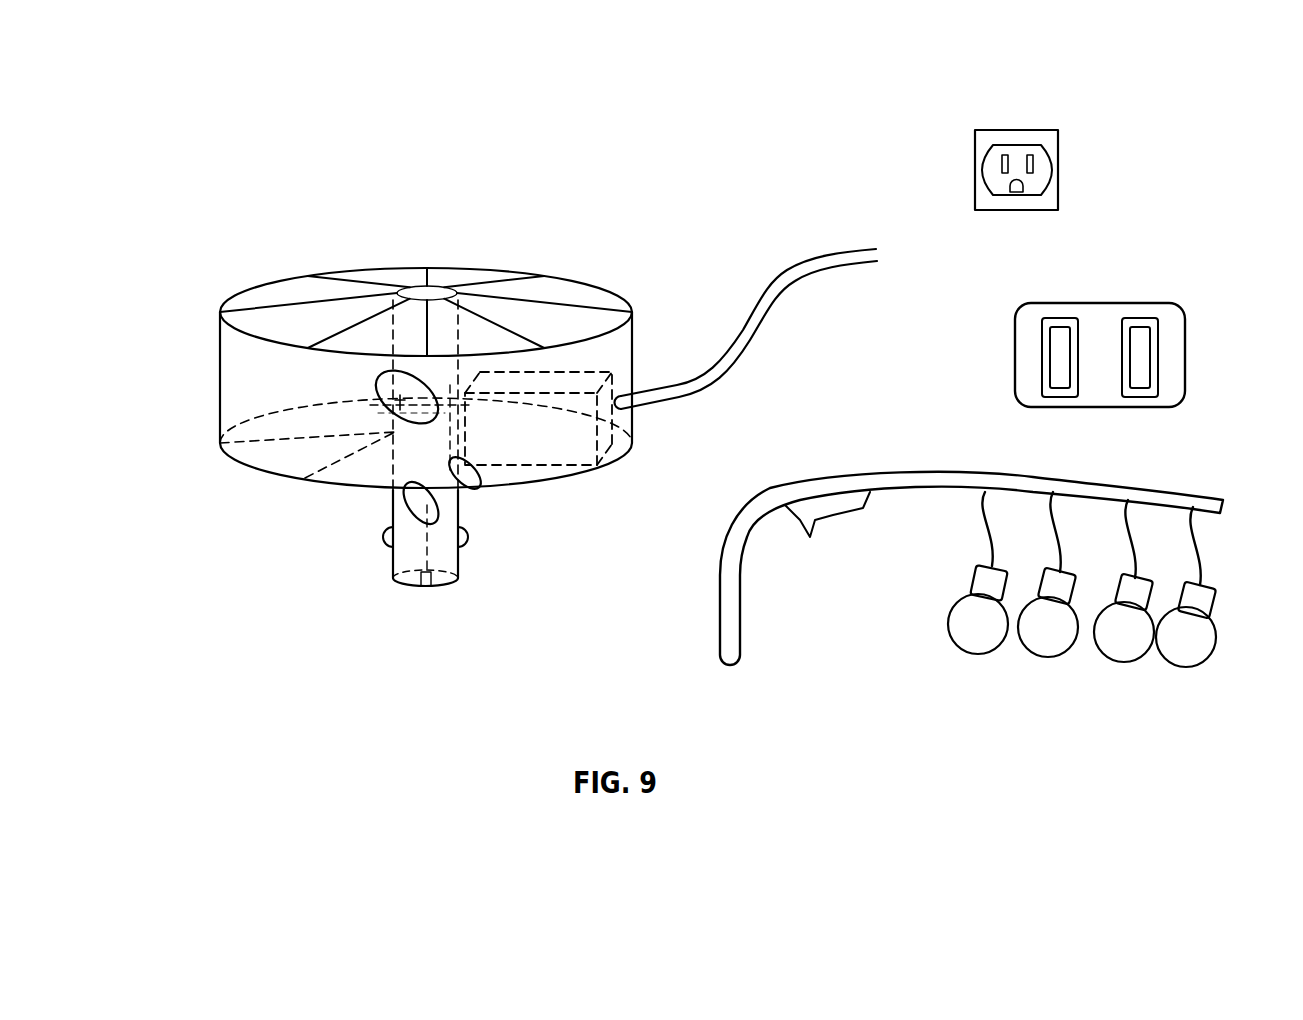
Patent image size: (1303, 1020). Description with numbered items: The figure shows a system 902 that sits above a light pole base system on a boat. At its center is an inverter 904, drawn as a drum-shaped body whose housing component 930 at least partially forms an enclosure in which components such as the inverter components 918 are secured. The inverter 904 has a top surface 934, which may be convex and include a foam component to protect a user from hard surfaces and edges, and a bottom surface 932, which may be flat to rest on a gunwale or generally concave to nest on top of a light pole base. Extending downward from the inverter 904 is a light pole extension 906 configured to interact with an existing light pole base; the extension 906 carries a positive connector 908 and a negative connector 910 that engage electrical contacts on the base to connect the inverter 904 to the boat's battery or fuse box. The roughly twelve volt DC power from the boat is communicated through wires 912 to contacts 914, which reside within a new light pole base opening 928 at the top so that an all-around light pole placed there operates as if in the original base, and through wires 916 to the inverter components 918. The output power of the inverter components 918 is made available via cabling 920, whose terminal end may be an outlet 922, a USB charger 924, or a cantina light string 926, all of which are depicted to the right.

The system 902 is at (375, 112).
The inverter 904 is at (283, 265).
The light pole extension 906 is at (464, 551).
The positive connector 908 is at (425, 591).
The negative connector 910 is at (382, 539).
The wires 912 is at (448, 519).
The contacts 914 is at (380, 398).
The wires 916 is at (481, 487).
The inverter components 918 is at (508, 443).
The cabling 920 is at (757, 340).
The outlet 922 is at (1060, 169).
The USB charger 924 is at (1187, 350).
The cantina light string 926 is at (1179, 456).
The new light pole base opening 928 is at (431, 291).
The housing component 930 is at (218, 398).
The bottom surface 932 is at (262, 484).
The top surface 934 is at (390, 256).